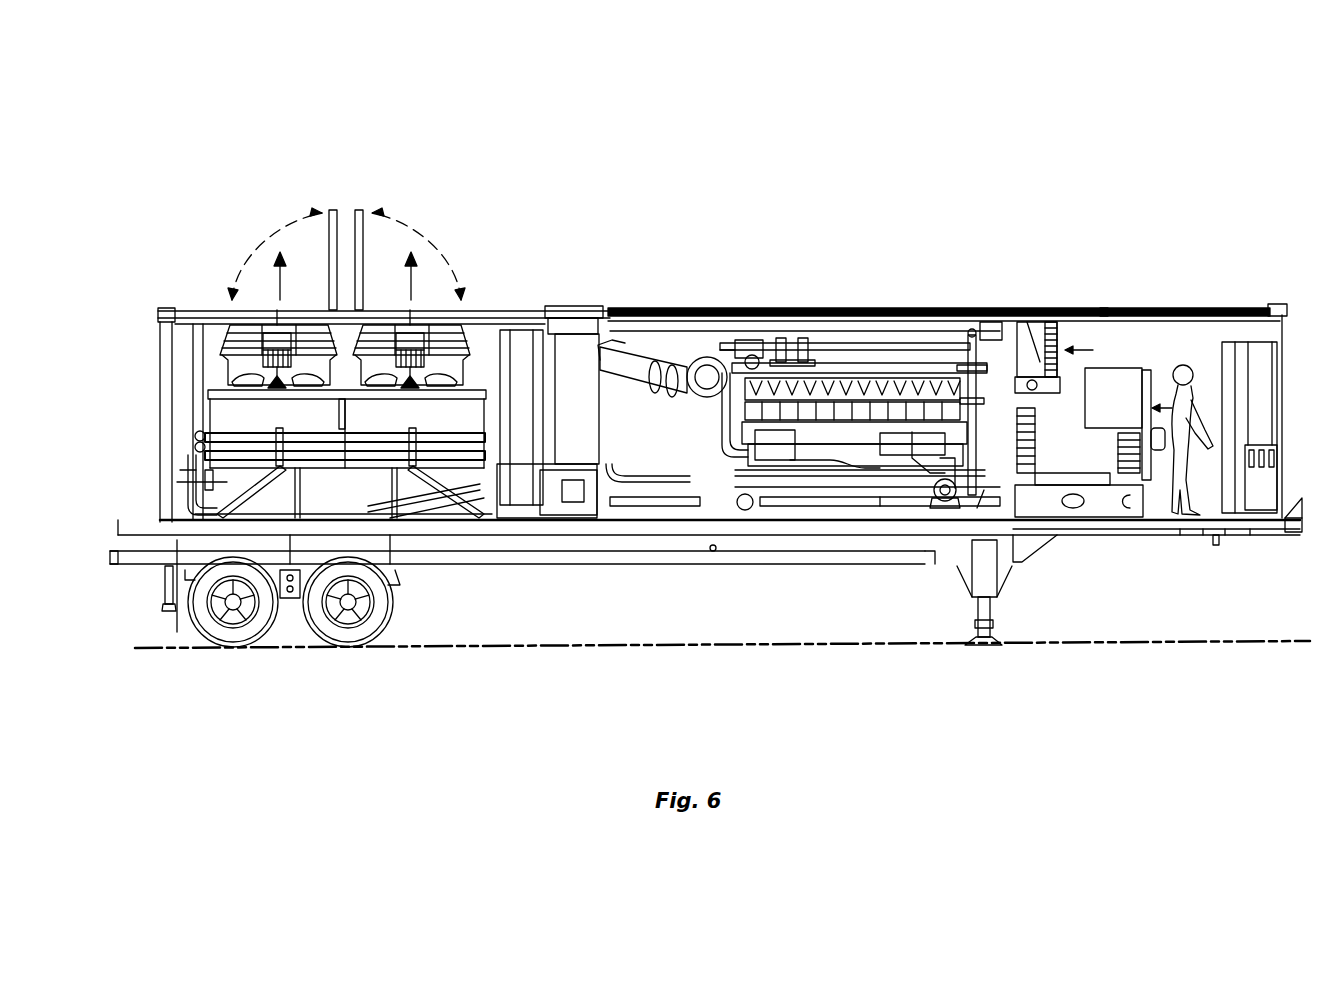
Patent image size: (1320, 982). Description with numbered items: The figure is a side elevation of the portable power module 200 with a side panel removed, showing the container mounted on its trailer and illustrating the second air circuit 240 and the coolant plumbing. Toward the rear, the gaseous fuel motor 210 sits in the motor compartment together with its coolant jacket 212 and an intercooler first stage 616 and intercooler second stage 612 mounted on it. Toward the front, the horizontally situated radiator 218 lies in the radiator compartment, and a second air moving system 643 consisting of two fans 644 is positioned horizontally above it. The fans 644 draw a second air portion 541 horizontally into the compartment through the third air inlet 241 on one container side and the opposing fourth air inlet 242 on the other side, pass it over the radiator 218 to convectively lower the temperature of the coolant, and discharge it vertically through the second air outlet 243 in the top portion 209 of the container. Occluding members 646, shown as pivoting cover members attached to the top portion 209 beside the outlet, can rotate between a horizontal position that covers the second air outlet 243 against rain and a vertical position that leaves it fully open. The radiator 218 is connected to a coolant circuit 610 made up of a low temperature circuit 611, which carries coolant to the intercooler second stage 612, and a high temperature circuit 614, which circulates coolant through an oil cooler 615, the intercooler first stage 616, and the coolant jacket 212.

The portable power module 200 is at (1105, 210).
The top portion 209 is at (1143, 306).
The gaseous fuel motor 210 is at (935, 365).
The motor coolant jacket 212 is at (890, 283).
The radiator 218 is at (236, 428).
The second air circuit 240 is at (455, 185).
The third air inlet 241 is at (165, 488).
The fourth air inlet 242 is at (177, 482).
The second air outlet 243 is at (228, 250).
The second air portion 541 is at (278, 284).
The coolant circuit 610 is at (660, 583).
The low temperature circuit 611 is at (627, 400).
The intercooler second stage 612 is at (790, 340).
The high temperature circuit 614 is at (812, 506).
The oil cooler 615 is at (912, 432).
The intercooler first stage 616 is at (753, 347).
The second air moving system 643 is at (178, 296).
The fans 644 is at (240, 383).
The occluding members 646 is at (337, 238).